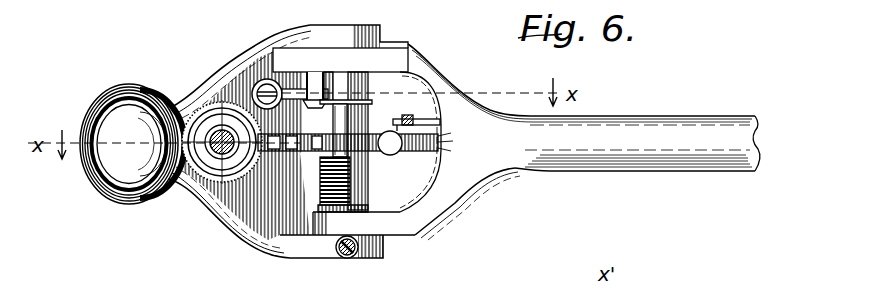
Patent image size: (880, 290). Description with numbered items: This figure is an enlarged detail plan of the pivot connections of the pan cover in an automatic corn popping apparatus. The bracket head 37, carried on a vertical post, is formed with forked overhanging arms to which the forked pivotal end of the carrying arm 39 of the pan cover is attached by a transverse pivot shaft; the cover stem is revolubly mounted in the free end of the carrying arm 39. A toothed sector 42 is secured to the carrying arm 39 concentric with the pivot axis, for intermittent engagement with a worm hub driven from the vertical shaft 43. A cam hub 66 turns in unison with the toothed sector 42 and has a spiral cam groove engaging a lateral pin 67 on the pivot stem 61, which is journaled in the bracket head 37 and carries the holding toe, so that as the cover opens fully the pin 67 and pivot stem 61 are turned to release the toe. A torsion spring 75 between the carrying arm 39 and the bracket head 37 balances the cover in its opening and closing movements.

The bracket head 37 is at (278, 254).
The carrying arm 39 is at (618, 167).
The toothed sector 42 is at (300, 152).
The vertical shaft 43 is at (210, 174).
The pivot stem 61 is at (248, 80).
The cam hub 66 is at (346, 141).
The lateral pin 67 is at (306, 101).
The torsion spring 75 is at (343, 184).